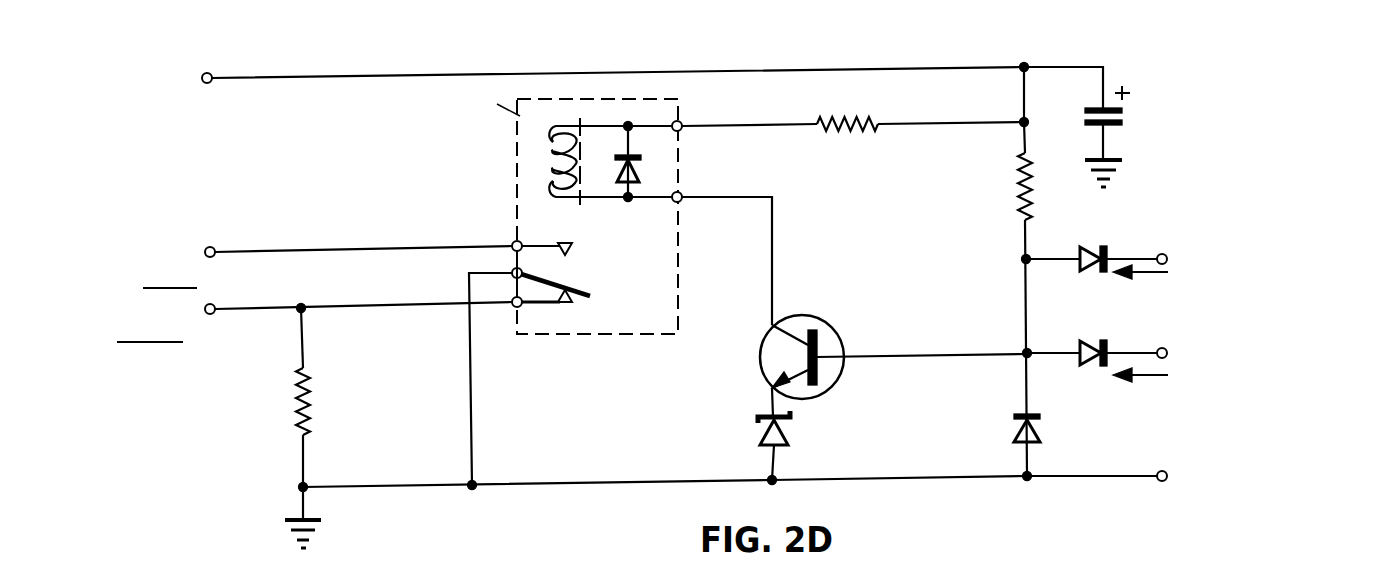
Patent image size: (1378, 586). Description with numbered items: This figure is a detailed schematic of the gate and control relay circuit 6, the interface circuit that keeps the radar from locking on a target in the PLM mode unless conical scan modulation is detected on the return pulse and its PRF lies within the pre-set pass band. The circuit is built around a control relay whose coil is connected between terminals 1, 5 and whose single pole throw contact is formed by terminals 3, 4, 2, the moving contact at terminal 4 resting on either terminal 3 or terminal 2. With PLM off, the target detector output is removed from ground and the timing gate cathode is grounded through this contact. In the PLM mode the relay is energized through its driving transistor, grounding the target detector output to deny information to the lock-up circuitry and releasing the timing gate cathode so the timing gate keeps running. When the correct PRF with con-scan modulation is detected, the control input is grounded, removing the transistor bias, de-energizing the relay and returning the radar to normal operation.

The relay K1 coil terminal 1 is at (682, 112).
The relay K1 contact terminal 2 is at (536, 309).
The relay K1 contact terminal 3 is at (536, 237).
The relay K1 armature terminal 4 is at (545, 271).
The relay K1 coil terminal 5 is at (683, 185).
The gate and control relay circuit 6 is at (690, 289).